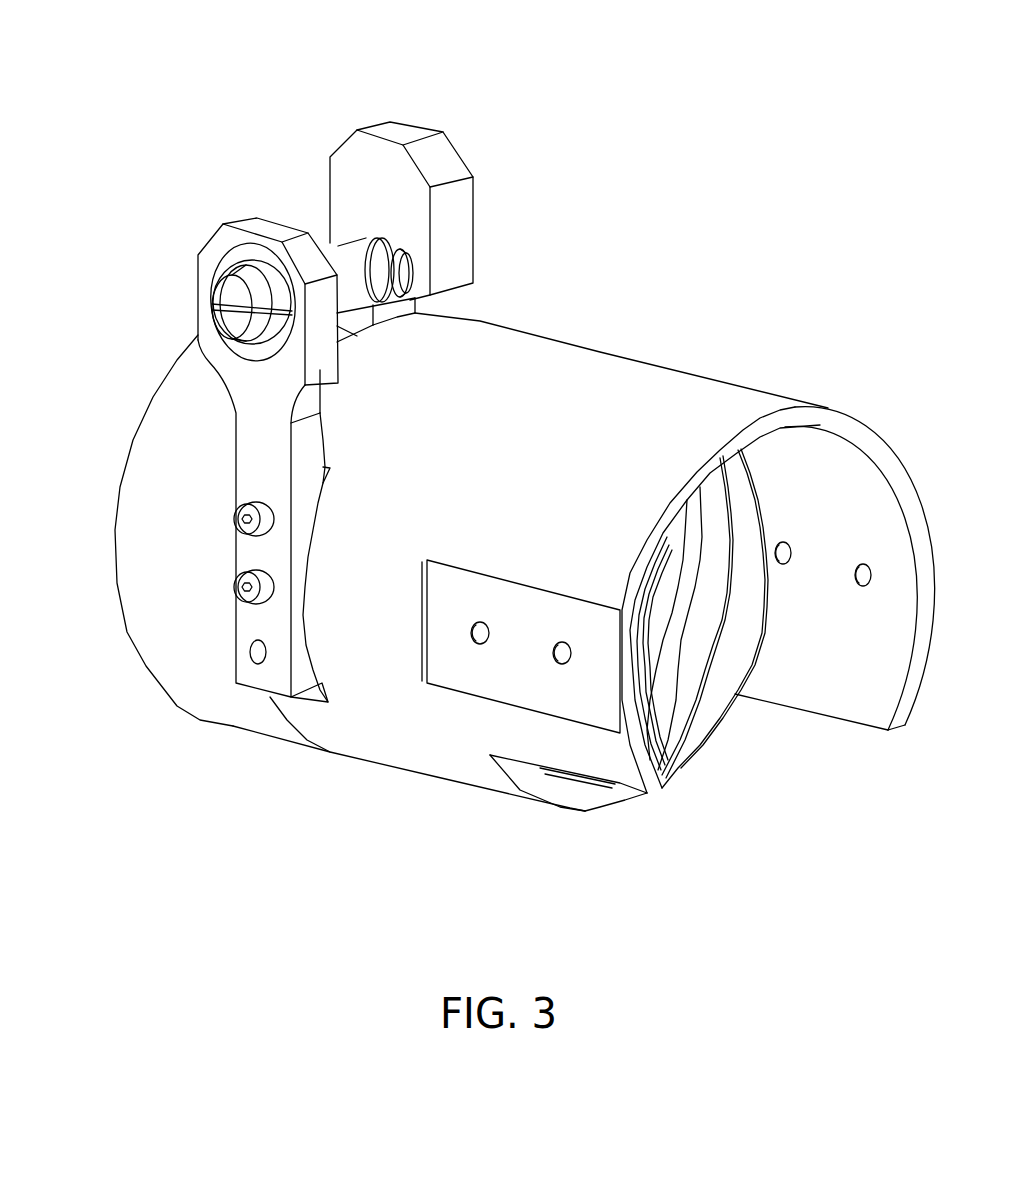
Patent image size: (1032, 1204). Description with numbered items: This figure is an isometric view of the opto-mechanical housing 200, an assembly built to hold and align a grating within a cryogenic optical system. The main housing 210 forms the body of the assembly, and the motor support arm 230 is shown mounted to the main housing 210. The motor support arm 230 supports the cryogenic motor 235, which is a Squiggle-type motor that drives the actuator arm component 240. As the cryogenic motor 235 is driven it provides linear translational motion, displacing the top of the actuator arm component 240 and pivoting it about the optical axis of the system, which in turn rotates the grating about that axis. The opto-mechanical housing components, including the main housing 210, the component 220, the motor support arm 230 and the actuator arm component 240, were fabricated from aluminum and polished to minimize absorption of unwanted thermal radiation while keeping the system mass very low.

The opto-mechanical housing 200 is at (128, 105).
The main housing 210 is at (223, 707).
The opto-mechanical housing component 220 is at (437, 767).
The motor support arm 230 is at (218, 250).
The cryogenic motor 235 is at (347, 257).
The actuator arm component 240 is at (397, 122).